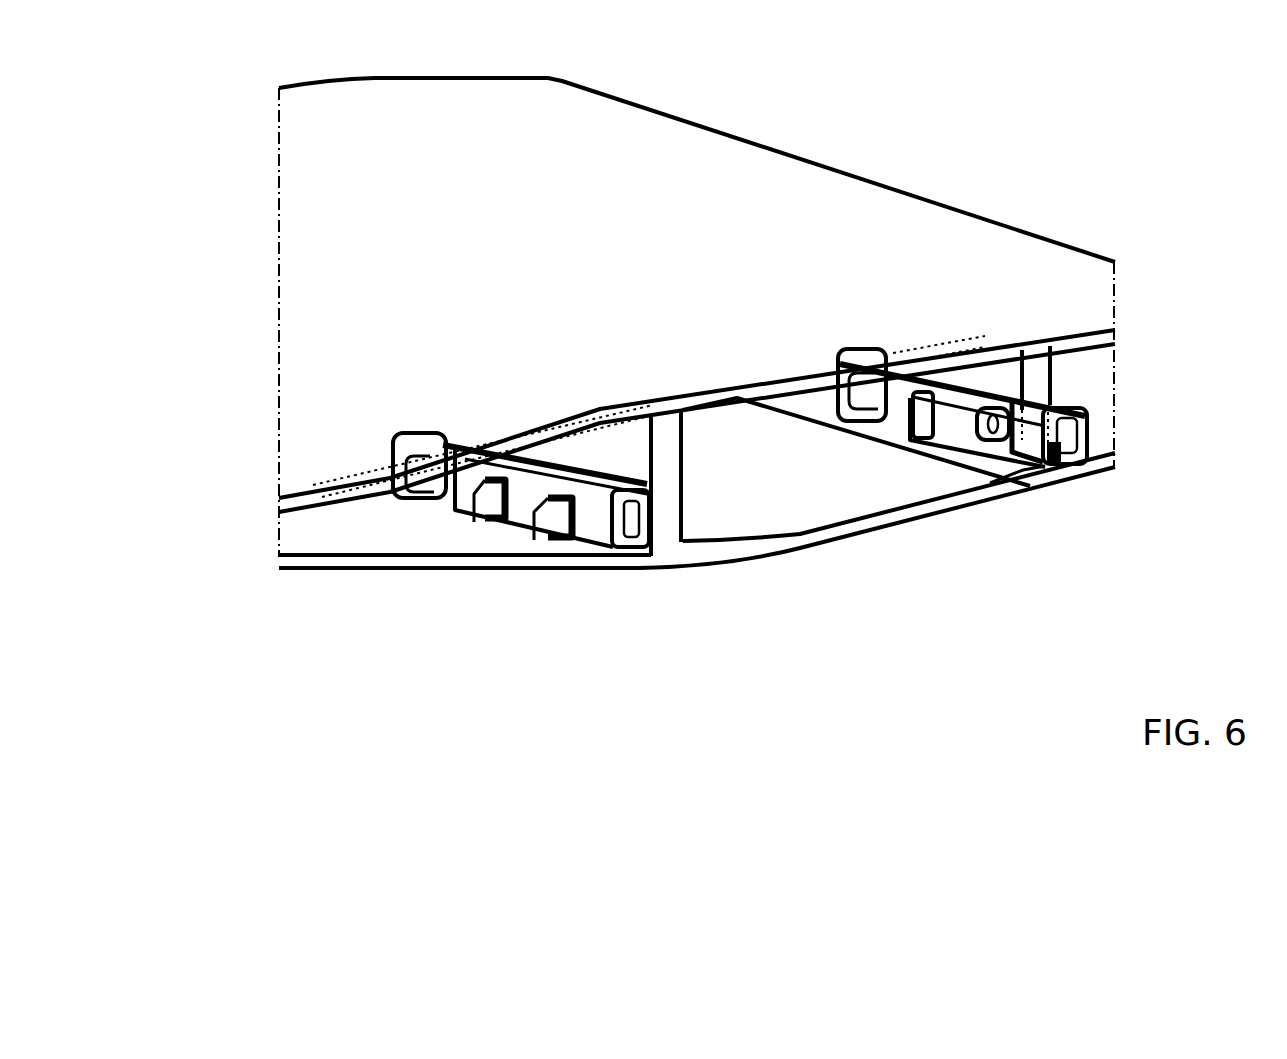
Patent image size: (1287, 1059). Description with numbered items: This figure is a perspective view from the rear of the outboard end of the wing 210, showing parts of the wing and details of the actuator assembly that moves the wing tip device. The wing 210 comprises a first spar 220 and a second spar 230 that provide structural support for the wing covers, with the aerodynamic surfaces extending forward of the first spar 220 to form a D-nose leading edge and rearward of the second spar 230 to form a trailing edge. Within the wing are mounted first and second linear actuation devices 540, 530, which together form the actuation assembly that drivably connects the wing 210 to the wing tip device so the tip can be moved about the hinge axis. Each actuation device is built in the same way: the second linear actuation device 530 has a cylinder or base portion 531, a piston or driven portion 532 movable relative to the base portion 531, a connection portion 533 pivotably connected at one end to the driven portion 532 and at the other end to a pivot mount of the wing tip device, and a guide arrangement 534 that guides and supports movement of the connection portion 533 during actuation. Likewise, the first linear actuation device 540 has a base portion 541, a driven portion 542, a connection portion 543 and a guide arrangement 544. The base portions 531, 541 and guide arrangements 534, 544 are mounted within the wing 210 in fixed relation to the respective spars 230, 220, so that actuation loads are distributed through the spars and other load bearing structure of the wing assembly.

The wing 210 is at (458, 198).
The first spar 220 is at (1040, 352).
The second spar 230 is at (668, 535).
The second linear actuation device 530 is at (399, 585).
The base portion 531 is at (428, 500).
The driven portion 532 is at (510, 490).
The connection portion 533 is at (575, 527).
The guide arrangement 534 is at (640, 540).
The first linear actuation device 540 is at (1021, 405).
The base portion 541 is at (887, 418).
The driven portion 542 is at (960, 413).
The connection portion 543 is at (1048, 472).
The guide arrangement 544 is at (1142, 419).